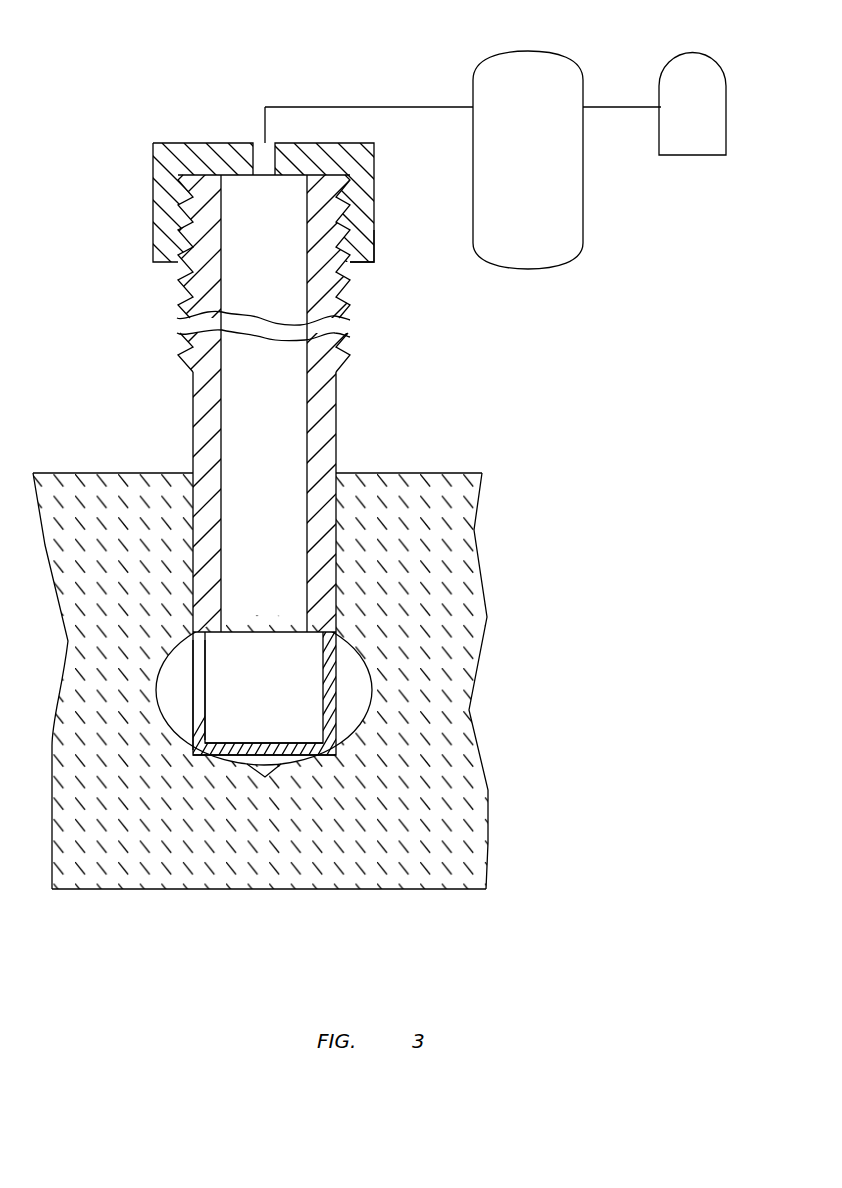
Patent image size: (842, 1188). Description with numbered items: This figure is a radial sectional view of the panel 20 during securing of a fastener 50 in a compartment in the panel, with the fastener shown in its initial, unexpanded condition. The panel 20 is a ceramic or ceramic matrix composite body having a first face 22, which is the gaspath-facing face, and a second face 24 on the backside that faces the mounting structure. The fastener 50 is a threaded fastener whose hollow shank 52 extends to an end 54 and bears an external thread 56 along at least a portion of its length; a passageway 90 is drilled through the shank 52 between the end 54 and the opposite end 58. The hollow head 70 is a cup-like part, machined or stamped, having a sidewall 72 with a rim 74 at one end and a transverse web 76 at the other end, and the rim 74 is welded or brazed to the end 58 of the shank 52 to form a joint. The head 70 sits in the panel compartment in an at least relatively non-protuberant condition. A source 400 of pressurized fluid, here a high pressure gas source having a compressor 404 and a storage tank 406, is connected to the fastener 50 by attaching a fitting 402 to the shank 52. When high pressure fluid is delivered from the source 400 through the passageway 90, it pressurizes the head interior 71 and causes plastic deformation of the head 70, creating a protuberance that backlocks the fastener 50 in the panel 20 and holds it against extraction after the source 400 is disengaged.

The panel 20 is at (284, 683).
The first face 22 is at (457, 891).
The second face 24 is at (467, 472).
The fastener 50 is at (366, 369).
The shank 52 is at (323, 420).
The end 54 is at (313, 170).
The external thread 56 is at (350, 291).
The end 58 is at (315, 633).
The head 70 is at (185, 684).
The head interior 71 is at (301, 731).
The sidewall 72 is at (196, 706).
The rim 74 is at (336, 631).
The transverse web 76 is at (250, 745).
The passageway 90 is at (276, 548).
The source of pressurized fluid 400 is at (634, 215).
The fitting 402 is at (362, 242).
The compressor 404 is at (711, 131).
The storage tank 406 is at (542, 168).